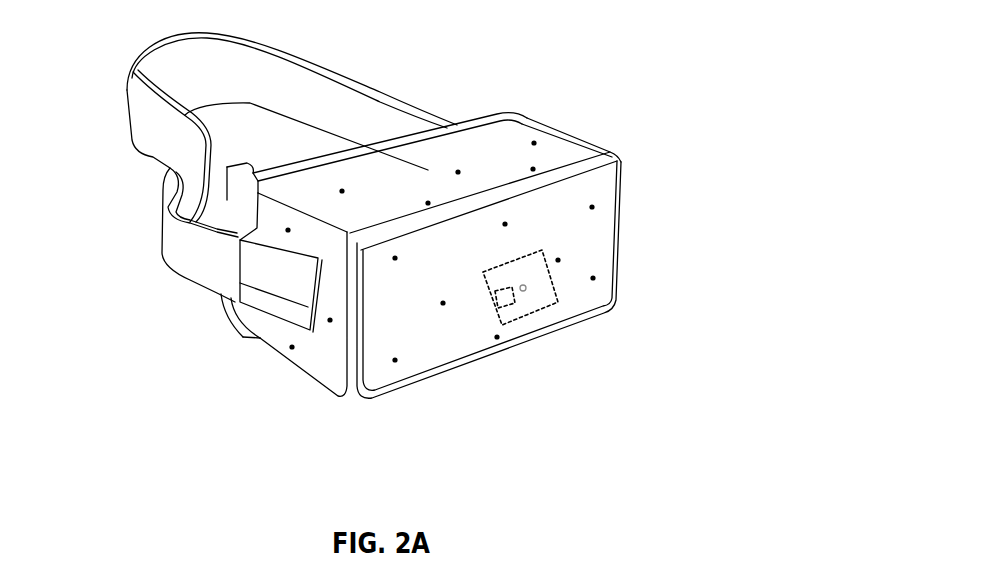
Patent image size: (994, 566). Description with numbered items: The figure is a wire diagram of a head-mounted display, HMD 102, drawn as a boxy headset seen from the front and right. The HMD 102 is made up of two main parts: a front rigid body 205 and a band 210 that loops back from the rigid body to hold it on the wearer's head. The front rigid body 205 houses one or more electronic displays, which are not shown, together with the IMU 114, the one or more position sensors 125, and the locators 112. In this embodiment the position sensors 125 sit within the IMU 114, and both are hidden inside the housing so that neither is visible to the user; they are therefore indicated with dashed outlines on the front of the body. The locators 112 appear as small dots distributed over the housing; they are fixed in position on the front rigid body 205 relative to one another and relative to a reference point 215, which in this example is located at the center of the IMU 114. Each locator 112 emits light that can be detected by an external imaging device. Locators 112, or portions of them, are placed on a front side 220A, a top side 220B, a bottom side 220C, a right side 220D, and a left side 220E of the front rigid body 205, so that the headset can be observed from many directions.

The HMD 102 is at (100, 43).
The band 210 is at (378, 80).
The front rigid body 205 is at (725, 115).
The front side 220A is at (386, 386).
The top side 220B is at (318, 192).
The bottom side 220C is at (286, 382).
The right side 220D is at (322, 357).
The left side 220E is at (596, 144).
The locators 112 is at (606, 273).
The IMU 114 is at (569, 304).
The position sensors 125 is at (496, 316).
The reference point 215 is at (526, 304).